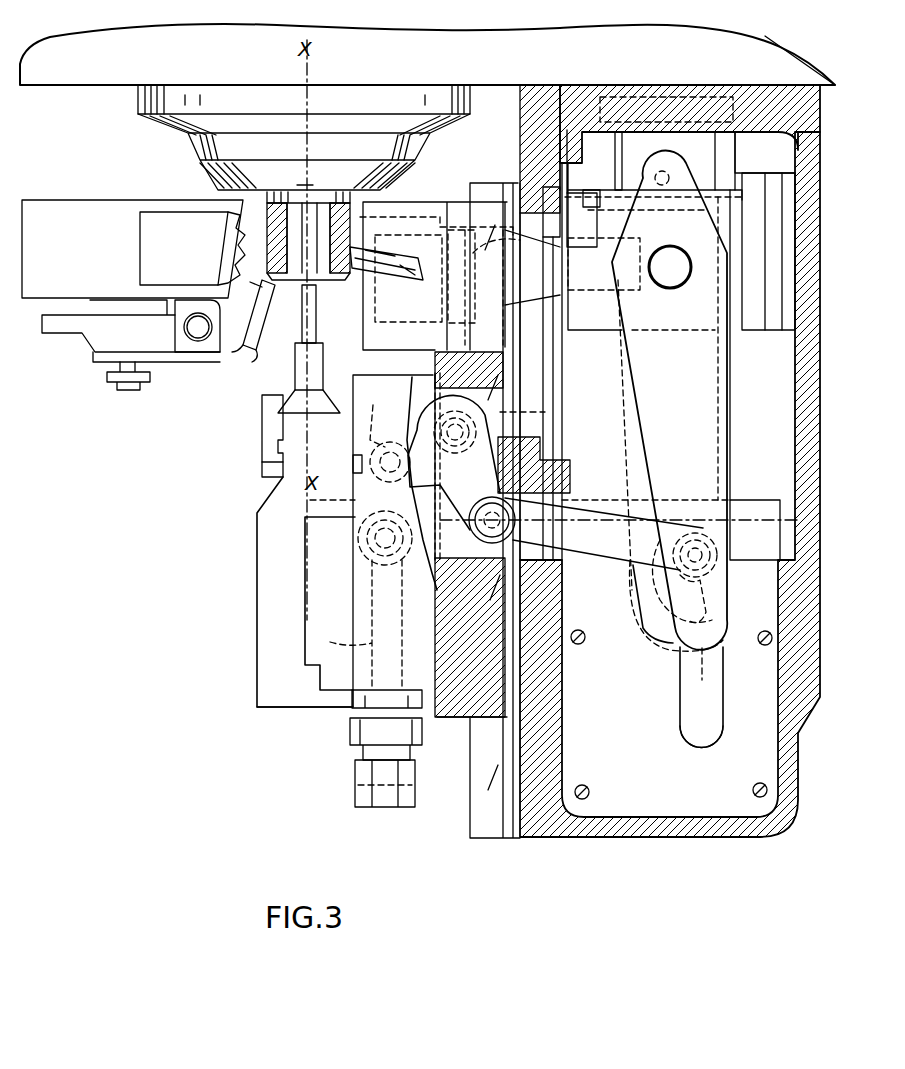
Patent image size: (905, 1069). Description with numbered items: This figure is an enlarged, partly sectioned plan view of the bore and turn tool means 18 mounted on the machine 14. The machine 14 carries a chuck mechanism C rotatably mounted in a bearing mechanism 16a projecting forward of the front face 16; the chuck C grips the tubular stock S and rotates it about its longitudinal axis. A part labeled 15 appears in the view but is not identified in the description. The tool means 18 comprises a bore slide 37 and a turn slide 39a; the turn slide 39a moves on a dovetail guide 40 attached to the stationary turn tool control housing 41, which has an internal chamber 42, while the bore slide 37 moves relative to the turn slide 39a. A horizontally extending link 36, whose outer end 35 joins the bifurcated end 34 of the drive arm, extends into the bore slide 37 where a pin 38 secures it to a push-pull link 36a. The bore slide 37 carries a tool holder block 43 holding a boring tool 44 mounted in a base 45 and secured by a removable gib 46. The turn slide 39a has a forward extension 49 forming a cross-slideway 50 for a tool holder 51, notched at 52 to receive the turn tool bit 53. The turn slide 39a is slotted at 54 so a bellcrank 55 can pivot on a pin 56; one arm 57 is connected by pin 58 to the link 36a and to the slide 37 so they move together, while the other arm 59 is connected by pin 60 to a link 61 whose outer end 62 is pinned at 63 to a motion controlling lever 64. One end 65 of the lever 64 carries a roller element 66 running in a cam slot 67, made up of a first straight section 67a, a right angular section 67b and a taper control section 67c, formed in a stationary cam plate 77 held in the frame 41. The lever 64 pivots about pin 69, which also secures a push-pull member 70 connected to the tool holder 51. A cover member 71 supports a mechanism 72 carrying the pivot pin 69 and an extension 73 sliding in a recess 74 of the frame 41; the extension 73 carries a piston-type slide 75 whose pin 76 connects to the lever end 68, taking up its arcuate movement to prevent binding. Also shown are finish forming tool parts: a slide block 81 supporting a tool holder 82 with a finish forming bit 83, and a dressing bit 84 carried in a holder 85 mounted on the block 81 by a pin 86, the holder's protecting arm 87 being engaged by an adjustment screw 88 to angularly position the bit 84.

The machine 14 is at (770, 36).
The work table plate 15 is at (62, 48).
The front face 16 is at (92, 88).
The bearing mechanism 16a is at (194, 90).
The bore and turn tool means 18 is at (315, 722).
The bifurcated end 34 is at (358, 795).
The outer end 35 is at (387, 812).
The horizontally extending link 36 is at (357, 625).
The push-pull link 36a is at (312, 508).
The bore slide 37 is at (257, 631).
The pin 38 is at (355, 546).
The turn slide 39a is at (456, 718).
The dovetail guide 40 is at (495, 840).
The turn tool control housing 41 is at (682, 838).
The internal chamber 42 is at (566, 673).
The tool holder block 43 is at (278, 475).
The boring tool 44 is at (316, 318).
The base 45 is at (323, 366).
The removable gib 46 is at (262, 433).
The forward extension 49 is at (456, 200).
The cross-slideway 50 is at (415, 328).
The tool holder 51 is at (420, 220).
The notch 52 is at (416, 288).
The turn tool bit 53 is at (384, 253).
The slot 54 is at (548, 392).
The bellcrank 55 is at (560, 442).
The pin 56 is at (548, 414).
The arm 57 is at (414, 531).
The pin 58 is at (367, 452).
The arm 59 is at (468, 528).
The pin 60 is at (560, 497).
The link 61 is at (617, 556).
The outer end 62 is at (742, 500).
The pin 63 is at (722, 553).
The motion controlling lever 64 is at (730, 450).
The end 65 is at (730, 630).
The roller element 66 is at (704, 672).
The cam slot 67 is at (672, 683).
The first straight section 67a is at (715, 700).
The right angular section 67b is at (730, 596).
The taper control section 67c is at (648, 596).
The end 68 is at (667, 160).
The pin 69 is at (670, 258).
The push-pull member 70 is at (600, 315).
The cover member 71 is at (442, 640).
The mechanism 72 is at (752, 324).
The extension 73 is at (737, 155).
The recess 74 is at (718, 140).
The piston-type slide 75 is at (628, 140).
The pin 76 is at (688, 166).
The cam plate 77 is at (690, 780).
The slide block 81 is at (52, 205).
The tool holder 82 is at (140, 250).
The finish forming bit 83 is at (228, 253).
The dressing bit 84 is at (264, 300).
The holder 85 is at (245, 348).
The pin 86 is at (200, 340).
The protecting arm 87 is at (90, 332).
The adjustment screw 88 is at (132, 392).
The stock S is at (268, 218).
The chuck mechanism C is at (305, 174).